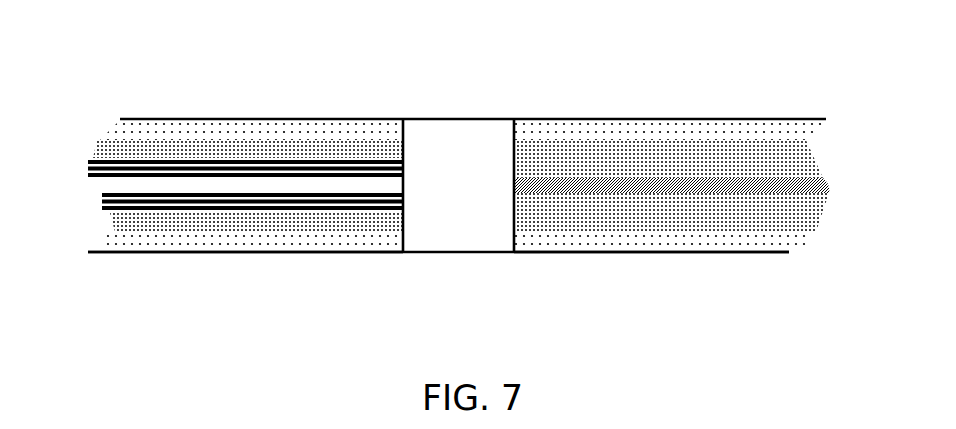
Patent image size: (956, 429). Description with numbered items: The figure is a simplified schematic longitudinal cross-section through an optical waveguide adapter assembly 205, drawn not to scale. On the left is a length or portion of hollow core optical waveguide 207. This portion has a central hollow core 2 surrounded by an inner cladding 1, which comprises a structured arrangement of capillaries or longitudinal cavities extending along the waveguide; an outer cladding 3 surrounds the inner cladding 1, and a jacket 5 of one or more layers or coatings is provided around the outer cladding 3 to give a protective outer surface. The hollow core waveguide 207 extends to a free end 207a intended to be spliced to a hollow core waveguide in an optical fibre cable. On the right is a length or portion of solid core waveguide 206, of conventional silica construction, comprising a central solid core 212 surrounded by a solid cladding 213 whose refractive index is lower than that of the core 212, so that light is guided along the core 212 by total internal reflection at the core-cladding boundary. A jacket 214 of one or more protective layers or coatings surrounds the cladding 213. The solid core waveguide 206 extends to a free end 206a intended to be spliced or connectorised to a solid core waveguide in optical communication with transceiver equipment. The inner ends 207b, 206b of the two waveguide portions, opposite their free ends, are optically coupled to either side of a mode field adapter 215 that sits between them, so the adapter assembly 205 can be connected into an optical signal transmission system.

The optical waveguide adapter assembly 205 is at (279, 83).
The mode field adapter 215 is at (455, 135).
The jacket 214 is at (826, 133).
The solid cladding 213 is at (826, 152).
The solid core 212 is at (834, 187).
The hollow core 2 is at (92, 185).
The inner cladding 1 is at (100, 208).
The outer cladding 3 is at (100, 218).
The jacket 5 is at (95, 241).
The free end 207a is at (108, 255).
The hollow core optical waveguide 207 is at (218, 255).
The end 207b is at (403, 253).
The end 206b is at (514, 253).
The solid core waveguide 206 is at (691, 255).
The free end 206a is at (804, 253).